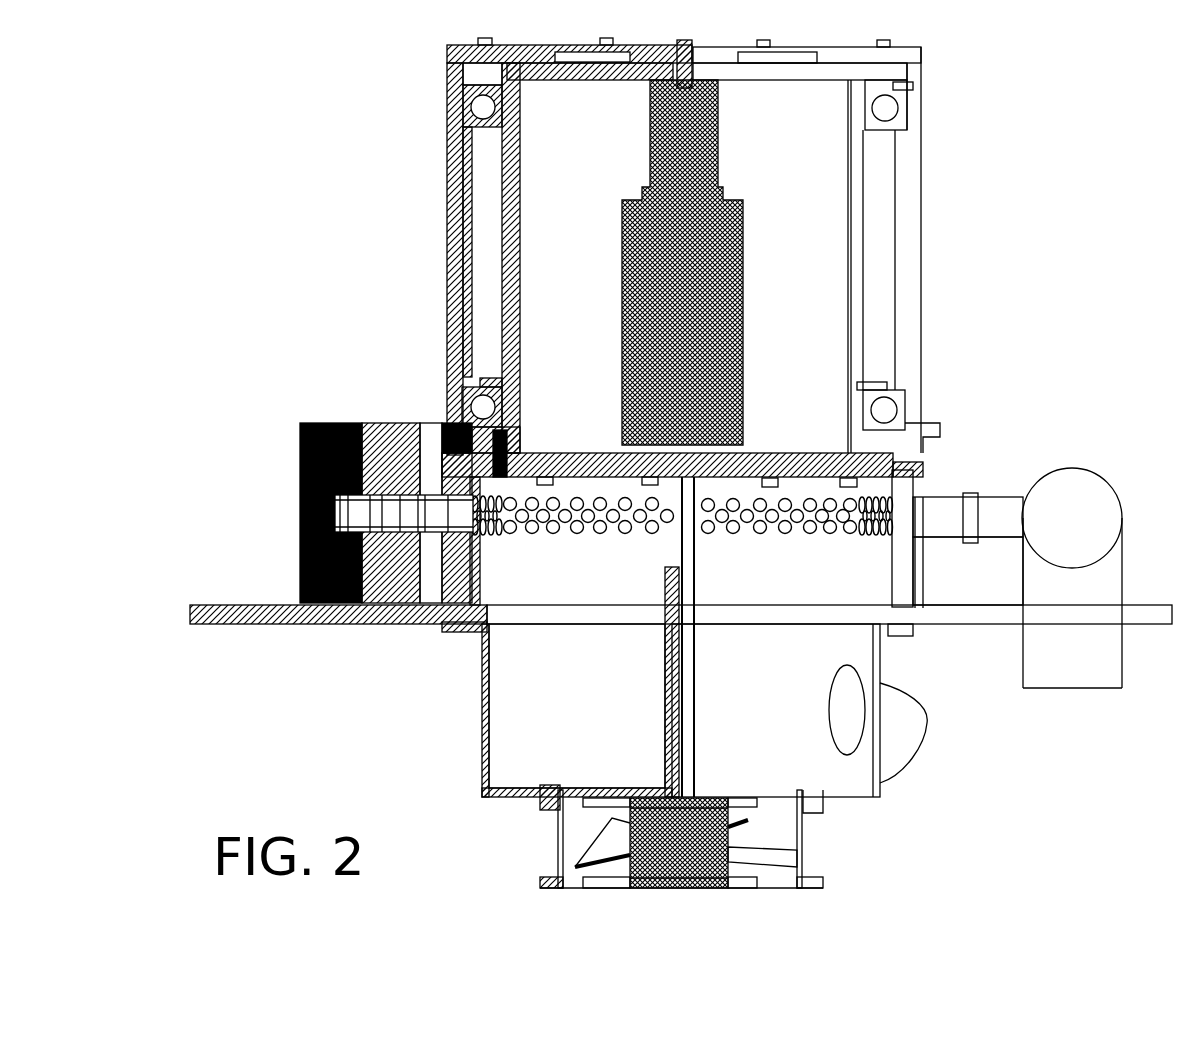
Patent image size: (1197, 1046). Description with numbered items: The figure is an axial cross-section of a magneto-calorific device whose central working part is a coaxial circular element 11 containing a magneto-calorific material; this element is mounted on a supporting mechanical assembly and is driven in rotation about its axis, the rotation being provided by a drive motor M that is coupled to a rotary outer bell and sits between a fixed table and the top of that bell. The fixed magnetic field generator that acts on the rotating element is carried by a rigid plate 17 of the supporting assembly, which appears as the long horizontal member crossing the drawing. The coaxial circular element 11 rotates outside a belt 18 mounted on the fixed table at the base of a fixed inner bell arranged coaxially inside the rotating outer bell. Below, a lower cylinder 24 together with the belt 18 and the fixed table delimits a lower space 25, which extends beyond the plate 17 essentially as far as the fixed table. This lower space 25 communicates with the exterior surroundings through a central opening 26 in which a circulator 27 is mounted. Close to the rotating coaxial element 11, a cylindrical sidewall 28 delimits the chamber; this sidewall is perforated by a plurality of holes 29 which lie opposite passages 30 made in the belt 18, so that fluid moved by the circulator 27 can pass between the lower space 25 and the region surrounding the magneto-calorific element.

The drive motor M is at (728, 248).
The coaxial circular element 11 is at (943, 512).
The rigid plate 17 is at (1070, 615).
The belt 18 is at (457, 583).
The lower cylinder 24 is at (482, 708).
The lower space 25 is at (612, 697).
The central opening 26 is at (766, 874).
The circulator 27 is at (773, 848).
The cylindrical sidewall 28 is at (766, 571).
The holes 29 is at (633, 520).
The passages 30 is at (463, 522).